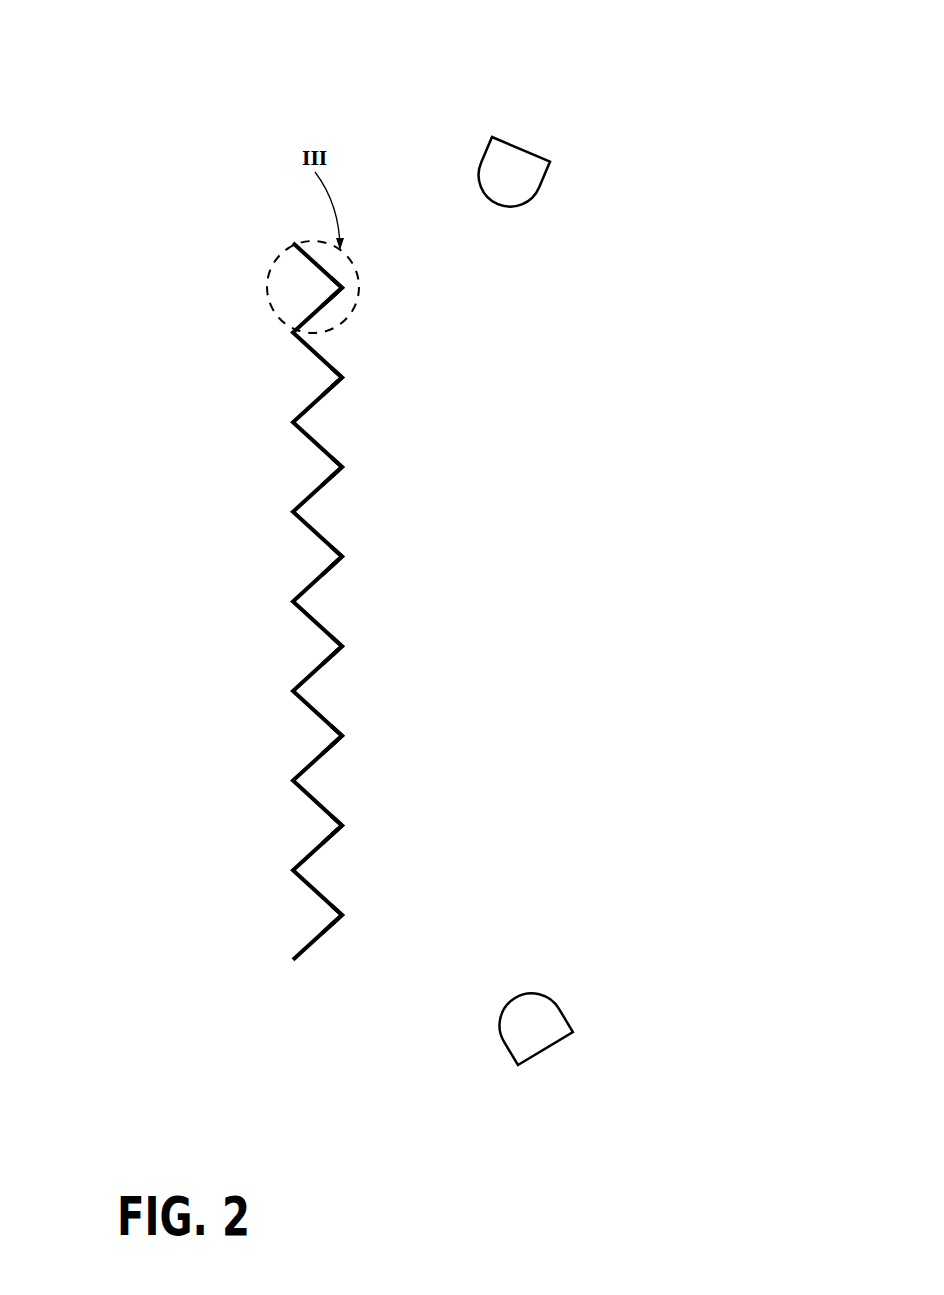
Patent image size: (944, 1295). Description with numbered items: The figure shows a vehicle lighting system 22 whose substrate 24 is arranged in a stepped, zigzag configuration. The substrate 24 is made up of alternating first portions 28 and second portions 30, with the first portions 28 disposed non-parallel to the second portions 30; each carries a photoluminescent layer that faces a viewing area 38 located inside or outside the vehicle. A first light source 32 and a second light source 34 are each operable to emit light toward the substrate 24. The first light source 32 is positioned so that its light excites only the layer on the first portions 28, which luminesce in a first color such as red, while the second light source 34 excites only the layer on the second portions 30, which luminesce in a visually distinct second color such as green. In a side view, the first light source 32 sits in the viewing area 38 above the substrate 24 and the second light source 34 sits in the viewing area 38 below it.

The vehicle lighting system 22 is at (755, 123).
The substrate 24 is at (228, 557).
The first portions 28 is at (350, 265).
The second portions 30 is at (335, 304).
The first light source 32 is at (510, 166).
The second light source 34 is at (550, 1027).
The viewing area 38 is at (730, 591).